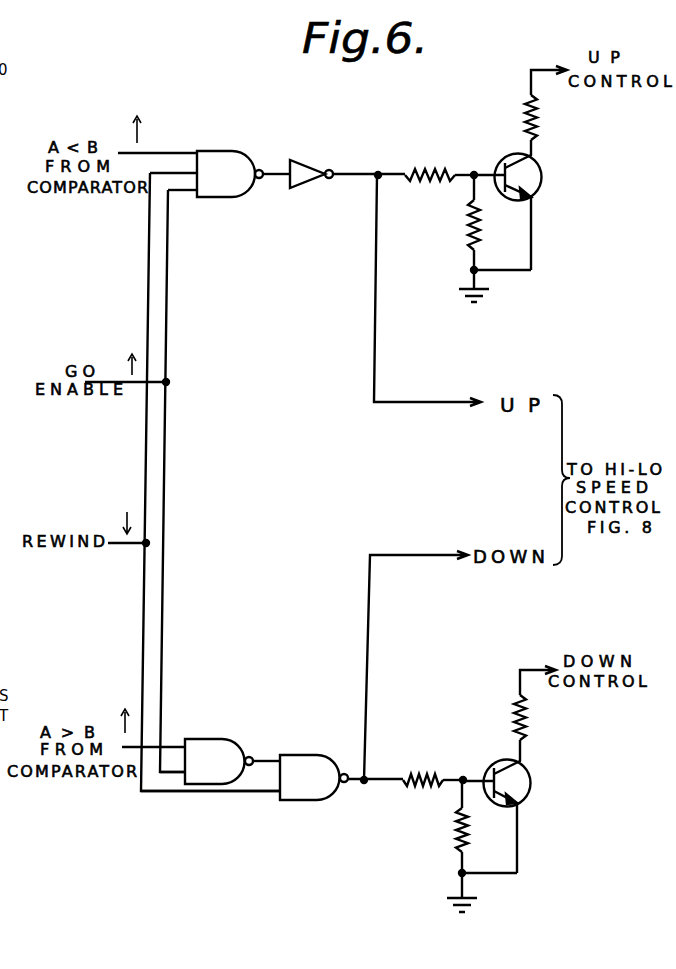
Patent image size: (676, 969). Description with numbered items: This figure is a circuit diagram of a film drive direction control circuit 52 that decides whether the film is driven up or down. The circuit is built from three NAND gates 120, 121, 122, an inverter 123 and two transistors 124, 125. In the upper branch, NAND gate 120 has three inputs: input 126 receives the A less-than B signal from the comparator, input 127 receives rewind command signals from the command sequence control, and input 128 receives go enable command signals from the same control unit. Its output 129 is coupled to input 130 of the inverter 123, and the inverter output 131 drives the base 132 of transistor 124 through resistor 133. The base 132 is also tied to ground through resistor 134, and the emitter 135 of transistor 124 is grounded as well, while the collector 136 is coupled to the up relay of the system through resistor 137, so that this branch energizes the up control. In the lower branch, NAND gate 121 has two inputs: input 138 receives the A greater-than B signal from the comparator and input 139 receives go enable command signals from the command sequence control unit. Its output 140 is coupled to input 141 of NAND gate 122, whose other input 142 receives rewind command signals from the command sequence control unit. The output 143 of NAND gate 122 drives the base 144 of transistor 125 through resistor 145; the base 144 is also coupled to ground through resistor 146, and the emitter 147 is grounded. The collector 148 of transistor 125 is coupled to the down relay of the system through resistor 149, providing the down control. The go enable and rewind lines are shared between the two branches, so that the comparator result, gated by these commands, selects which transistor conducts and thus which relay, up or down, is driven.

The film drive direction control circuit 52 is at (316, 454).
The NAND gate 120 is at (226, 151).
The NAND gate 121 is at (210, 742).
The NAND gate 122 is at (306, 759).
The inverter 123 is at (310, 187).
The transistor 124 is at (540, 190).
The transistor 125 is at (531, 777).
The input 126 is at (197, 152).
The input 127 is at (180, 167).
The input 128 is at (197, 194).
The output 129 is at (259, 178).
The input 130 is at (262, 170).
The output 131 is at (333, 172).
The base 132 is at (500, 182).
The resistor 133 is at (428, 170).
The resistor 134 is at (470, 228).
The emitter 135 is at (538, 208).
The collector 136 is at (533, 153).
The resistor 137 is at (538, 112).
The input 138 is at (182, 740).
The input 139 is at (182, 778).
The output 140 is at (256, 758).
The input 141 is at (270, 760).
The input 142 is at (276, 795).
The output 143 is at (347, 784).
The base 144 is at (490, 800).
The resistor 145 is at (420, 790).
The resistor 146 is at (456, 840).
The emitter 147 is at (525, 805).
The collector 148 is at (521, 755).
The resistor 149 is at (517, 720).